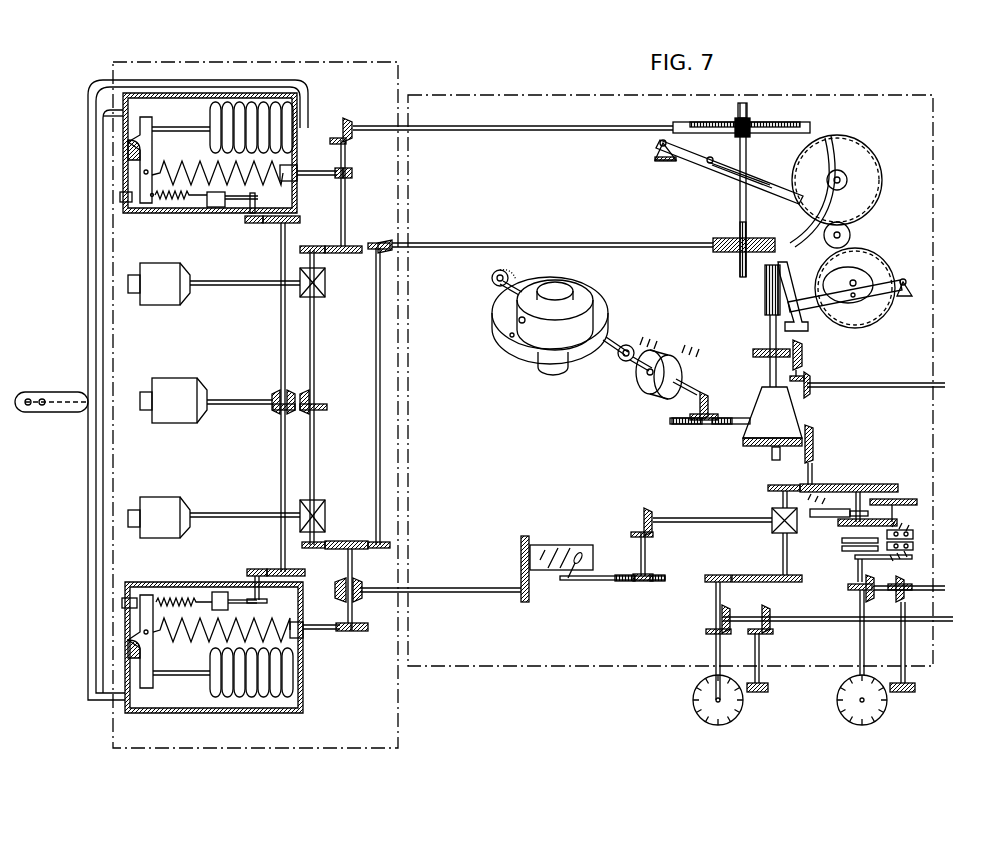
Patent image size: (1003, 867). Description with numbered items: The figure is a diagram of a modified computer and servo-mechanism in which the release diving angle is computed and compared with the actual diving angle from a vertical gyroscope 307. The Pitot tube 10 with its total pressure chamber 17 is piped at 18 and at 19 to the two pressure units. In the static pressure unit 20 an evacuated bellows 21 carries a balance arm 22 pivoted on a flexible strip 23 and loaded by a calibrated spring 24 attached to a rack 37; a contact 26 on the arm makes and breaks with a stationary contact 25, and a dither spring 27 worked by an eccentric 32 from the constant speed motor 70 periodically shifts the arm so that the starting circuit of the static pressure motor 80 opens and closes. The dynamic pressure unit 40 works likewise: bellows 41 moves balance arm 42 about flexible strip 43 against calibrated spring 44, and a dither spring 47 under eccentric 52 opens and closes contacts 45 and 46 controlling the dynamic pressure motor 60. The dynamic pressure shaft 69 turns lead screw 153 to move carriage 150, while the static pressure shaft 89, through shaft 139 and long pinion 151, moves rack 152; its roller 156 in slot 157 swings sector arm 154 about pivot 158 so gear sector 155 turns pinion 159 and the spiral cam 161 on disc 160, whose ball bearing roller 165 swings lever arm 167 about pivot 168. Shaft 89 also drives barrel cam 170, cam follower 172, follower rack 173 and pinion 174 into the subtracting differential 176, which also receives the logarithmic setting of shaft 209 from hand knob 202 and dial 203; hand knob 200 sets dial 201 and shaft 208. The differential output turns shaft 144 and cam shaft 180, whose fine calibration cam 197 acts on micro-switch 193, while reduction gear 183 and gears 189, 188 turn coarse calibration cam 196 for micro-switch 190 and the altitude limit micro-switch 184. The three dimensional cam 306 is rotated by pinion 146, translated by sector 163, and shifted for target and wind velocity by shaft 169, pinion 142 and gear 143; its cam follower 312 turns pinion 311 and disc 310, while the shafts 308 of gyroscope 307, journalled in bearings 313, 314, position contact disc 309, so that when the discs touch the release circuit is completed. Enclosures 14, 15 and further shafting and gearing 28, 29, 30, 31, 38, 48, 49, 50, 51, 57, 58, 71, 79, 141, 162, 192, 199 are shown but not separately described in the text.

The Pitot tube 10 is at (45, 390).
The first unit enclosure 14 is at (335, 62).
The second unit enclosure 15 is at (528, 97).
The total pressure chamber 17 is at (58, 412).
The pipe 18 is at (308, 100).
The pipe 19 is at (100, 210).
The static pressure unit 20 is at (230, 712).
The evacuated bellows element 21 is at (290, 660).
The balance arm 22 is at (148, 688).
The flexible strip 23 is at (128, 647).
The calibrated spring 24 is at (195, 640).
The stationary contact 25 is at (122, 603).
The contact 26 is at (144, 595).
The dither spring 27 is at (172, 600).
The block 28 is at (215, 592).
The rod 29 is at (255, 585).
The gear 30 is at (288, 567).
The shaft 31 is at (247, 568).
The eccentric 32 is at (267, 602).
The rack 37 is at (368, 630).
The bevel gear 38 is at (340, 631).
The dynamic pressure unit 40 is at (207, 216).
The bellows 41 is at (212, 112).
The balance arm 42 is at (146, 120).
The flexible strip 43 is at (128, 143).
The calibrated spring 44 is at (197, 163).
The fixed contact 45 is at (120, 196).
The movable contact 46 is at (148, 200).
The dither spring 47 is at (165, 200).
The block 48 is at (210, 207).
The rod 49 is at (244, 201).
The gear 50 is at (252, 223).
The gear 51 is at (298, 222).
The eccentric 52 is at (285, 181).
The shaft 57 is at (322, 176).
The gear 58 is at (347, 178).
The dynamic pressure motor 60 is at (175, 270).
The dynamic pressure shaft 69 is at (598, 126).
The constant speed motor 70 is at (193, 383).
The shaft 71 is at (236, 400).
The shaft 79 is at (315, 376).
The static pressure motor 80 is at (163, 497).
The static pressure shaft 89 is at (480, 593).
The shaft 139 is at (376, 325).
The gear 141 is at (748, 445).
The pinion 142 is at (803, 358).
The gear 143 is at (766, 353).
The shaft 144 is at (807, 468).
The pinion 146 is at (814, 450).
The carriage 150 is at (737, 118).
The long pinion 151 is at (760, 240).
The rack 152 is at (740, 218).
The lead screw 153 is at (793, 122).
The sector arm 154 is at (782, 188).
The gear sector 155 is at (828, 140).
The roller 156 is at (740, 178).
The elongated slot 157 is at (708, 165).
The pivot 158 is at (660, 142).
The pinion 159 is at (847, 180).
The disc 160 is at (832, 248).
The spiral cam 161 is at (868, 272).
The rack 162 is at (765, 300).
The sector 163 is at (800, 328).
The ball bearing roller 165 is at (853, 298).
The lever arm 167 is at (880, 290).
The pivot 168 is at (909, 296).
The shaft 169 is at (900, 388).
The barrel cam 170 is at (578, 542).
The cam follower 172 is at (572, 577).
The follower rack 173 is at (620, 582).
The pinion 174 is at (647, 570).
The subtracting differential 176 is at (772, 510).
The cam shaft 180 is at (856, 486).
The reduction gear 183 is at (893, 498).
The micro-switch 184 is at (838, 524).
The gear 188 is at (842, 541).
The gear 189 is at (905, 528).
The micro-switch 190 is at (913, 545).
The bevel gear 192 is at (868, 590).
The micro-switch 193 is at (912, 549).
The coarse calibration cam 196 is at (845, 551).
The fine calibration cam 197 is at (858, 559).
The shaft 199 is at (856, 583).
The hand knob 200 is at (905, 692).
The dial 201 is at (838, 708).
The hand knob 202 is at (752, 692).
The dial 203 is at (694, 706).
The shaft 208 is at (940, 586).
The shaft 209 is at (716, 599).
The three dimensional cam 306 is at (788, 410).
The vertical gyroscope 307 is at (563, 288).
The shafts 308 is at (505, 280).
The contact disc 309 is at (648, 350).
The disc 310 is at (680, 368).
The pinion 311 is at (688, 409).
The cam follower 312 is at (712, 418).
The bearing 313 is at (492, 272).
The bearing 314 is at (620, 360).